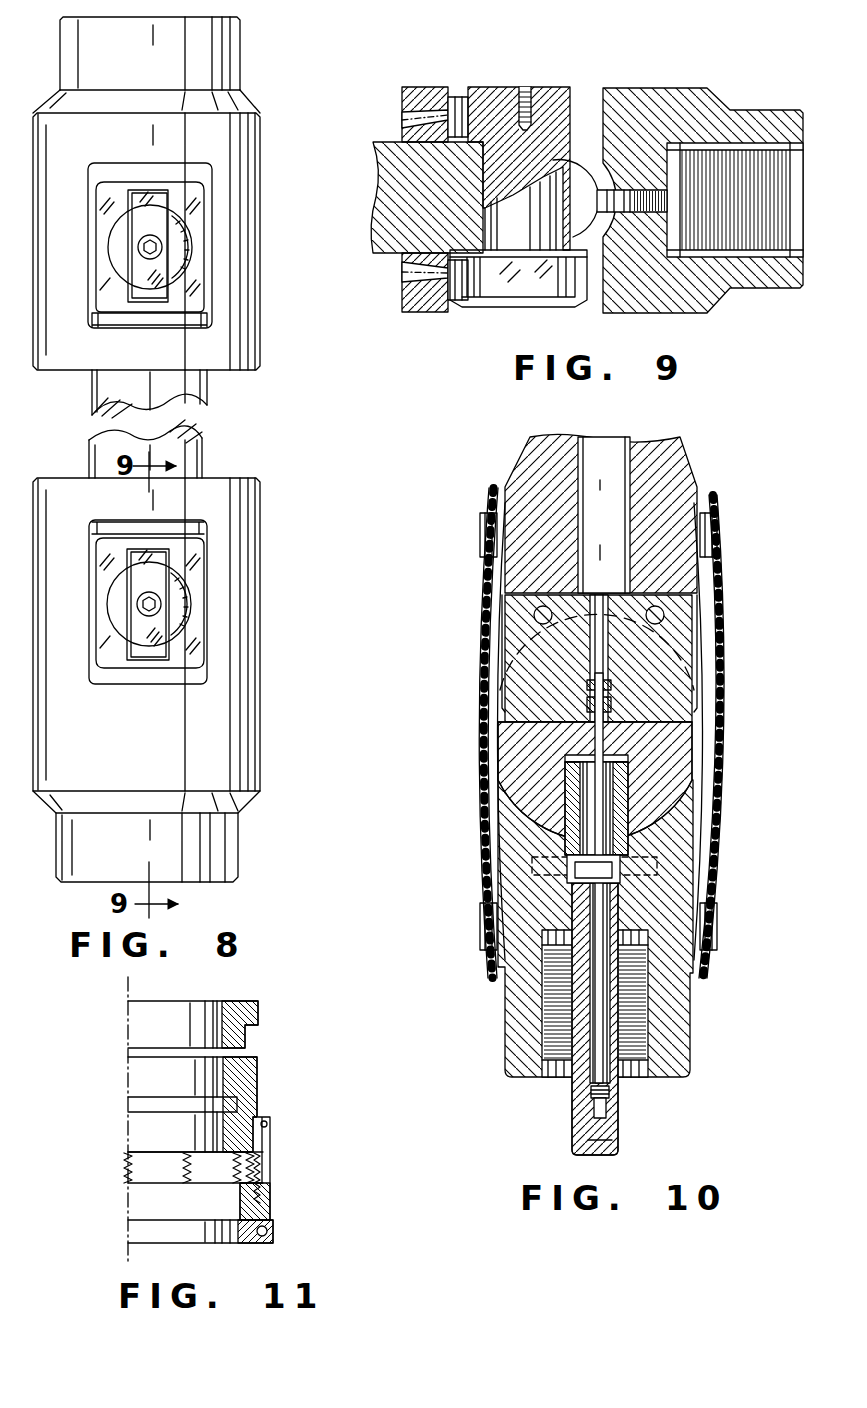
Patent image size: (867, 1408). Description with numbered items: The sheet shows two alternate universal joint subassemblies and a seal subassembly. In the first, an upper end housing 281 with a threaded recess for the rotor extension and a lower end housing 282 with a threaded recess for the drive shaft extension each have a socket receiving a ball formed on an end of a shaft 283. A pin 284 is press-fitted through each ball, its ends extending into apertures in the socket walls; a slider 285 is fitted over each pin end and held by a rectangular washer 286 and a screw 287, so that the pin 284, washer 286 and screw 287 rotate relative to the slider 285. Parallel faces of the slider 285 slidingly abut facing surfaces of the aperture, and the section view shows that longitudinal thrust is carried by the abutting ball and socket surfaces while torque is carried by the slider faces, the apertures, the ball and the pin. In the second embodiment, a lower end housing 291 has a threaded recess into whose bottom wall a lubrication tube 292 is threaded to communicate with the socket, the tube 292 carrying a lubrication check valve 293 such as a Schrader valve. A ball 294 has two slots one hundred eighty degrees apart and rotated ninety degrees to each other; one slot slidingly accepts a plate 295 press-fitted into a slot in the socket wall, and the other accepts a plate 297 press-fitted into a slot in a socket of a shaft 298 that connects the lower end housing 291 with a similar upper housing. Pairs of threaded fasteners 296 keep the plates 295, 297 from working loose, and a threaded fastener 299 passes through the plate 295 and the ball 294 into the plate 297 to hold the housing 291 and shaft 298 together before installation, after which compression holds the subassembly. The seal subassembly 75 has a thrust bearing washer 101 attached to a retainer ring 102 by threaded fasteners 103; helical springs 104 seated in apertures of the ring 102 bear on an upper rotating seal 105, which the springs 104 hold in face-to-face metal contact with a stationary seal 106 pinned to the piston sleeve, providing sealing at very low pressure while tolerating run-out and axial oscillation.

In FIG. 8, the upper end housing 281 is at (252, 152).
In FIG. 8, the lower end housing 282 is at (258, 536).
In FIG. 9, the lower end housing 282 is at (718, 106).
In FIG. 8, the shaft 283 is at (200, 447).
In FIG. 9, the shaft 283 is at (384, 148).
In FIG. 9, the pin 284 is at (566, 104).
In FIG. 9, the slider 285 is at (458, 97).
In FIG. 9, the rectangular washer 286 is at (500, 90).
In FIG. 9, the screw 287 is at (528, 97).
In FIG. 10, the lower end housing 291 is at (690, 1006).
In FIG. 10, the lubrication tube 292 is at (572, 1094).
In FIG. 10, the lubrication check valve 293 is at (612, 1111).
In FIG. 10, the ball 294 is at (508, 744).
In FIG. 10, the plate 295 is at (568, 849).
In FIG. 10, the threaded fasteners 296 is at (664, 618).
In FIG. 10, the plate 297 is at (680, 653).
In FIG. 10, the shaft 298 is at (676, 457).
In FIG. 10, the threaded fastener 299 is at (604, 795).
In FIG. 11, the seal subassembly 75 is at (112, 1072).
In FIG. 11, the thrust bearing washer 101 is at (272, 1237).
In FIG. 11, the retainer ring 102 is at (268, 1193).
In FIG. 11, the threaded fasteners 103 is at (276, 1228).
In FIG. 11, the helical springs 104 is at (262, 1172).
In FIG. 11, the upper rotating seal 105 is at (255, 1090).
In FIG. 11, the stationary seal 106 is at (258, 1014).